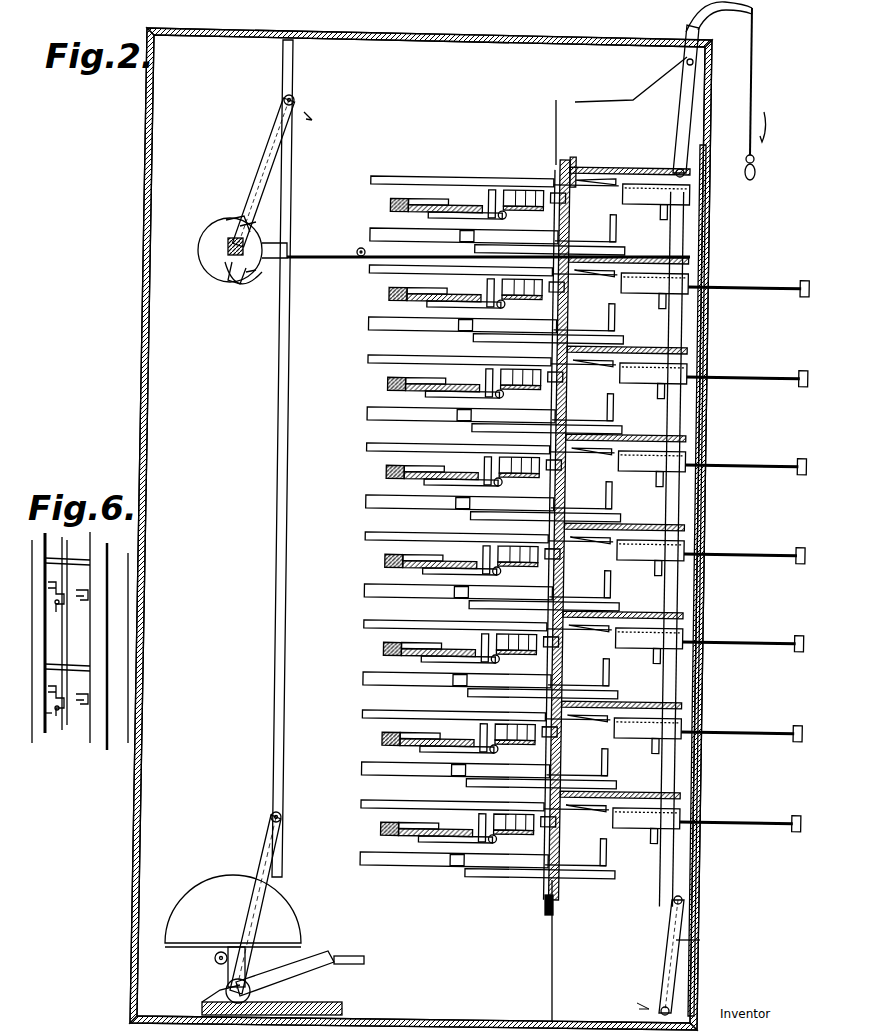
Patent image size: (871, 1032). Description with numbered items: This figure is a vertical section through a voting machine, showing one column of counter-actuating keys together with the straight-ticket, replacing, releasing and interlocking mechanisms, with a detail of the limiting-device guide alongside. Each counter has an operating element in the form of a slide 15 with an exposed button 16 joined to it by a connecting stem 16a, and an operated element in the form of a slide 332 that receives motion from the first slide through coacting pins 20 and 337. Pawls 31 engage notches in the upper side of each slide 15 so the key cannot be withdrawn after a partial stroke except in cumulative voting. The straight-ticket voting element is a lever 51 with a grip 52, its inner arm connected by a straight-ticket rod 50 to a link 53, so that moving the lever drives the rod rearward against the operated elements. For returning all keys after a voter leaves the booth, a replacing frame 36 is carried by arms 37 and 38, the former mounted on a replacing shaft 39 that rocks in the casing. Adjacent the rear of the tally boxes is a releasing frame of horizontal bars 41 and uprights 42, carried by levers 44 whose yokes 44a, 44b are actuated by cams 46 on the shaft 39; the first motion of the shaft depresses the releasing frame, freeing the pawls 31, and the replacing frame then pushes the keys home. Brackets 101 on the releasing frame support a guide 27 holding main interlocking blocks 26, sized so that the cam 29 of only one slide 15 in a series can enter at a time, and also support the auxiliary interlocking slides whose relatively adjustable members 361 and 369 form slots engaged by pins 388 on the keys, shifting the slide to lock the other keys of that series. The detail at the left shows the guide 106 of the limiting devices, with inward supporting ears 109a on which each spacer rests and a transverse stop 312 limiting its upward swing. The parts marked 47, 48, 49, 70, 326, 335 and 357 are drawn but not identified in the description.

In FIG. 2, the slide 15 is at (632, 182).
In FIG. 2, the button 16 is at (805, 276).
In FIG. 2, the connecting stem 16a is at (768, 283).
In FIG. 2, the pin 20 is at (662, 215).
In FIG. 2, the interlocking blocks 26 is at (500, 205).
In FIG. 2, the guide 27 is at (492, 190).
In FIG. 2, the cam 29 is at (550, 193).
In FIG. 2, the pawls 31 is at (569, 160).
In FIG. 2, the replacing frame 36 is at (278, 432).
In FIG. 2, the arms 37 is at (266, 143).
In FIG. 2, the arms 38 is at (262, 845).
In FIG. 2, the replacing shaft 39 is at (228, 268).
In FIG. 2, the horizontal bars 41 is at (545, 915).
In FIG. 2, the uprights 42 is at (556, 489).
In FIG. 2, the levers 44 is at (305, 252).
In FIG. 2, the yoke 44a is at (252, 226).
In FIG. 2, the yoke 44b is at (258, 270).
In FIG. 2, the cams 46 is at (220, 228).
In FIG. 2, the foot lever 47 is at (348, 966).
In FIG. 2, the pedestal 48 is at (262, 972).
In FIG. 2, the bell 49 is at (200, 893).
In FIG. 2, the straight-ticket rod 50 is at (672, 905).
In FIG. 2, the lever 51 is at (683, 76).
In FIG. 2, the grip 52 is at (756, 40).
In FIG. 2, the link 53 is at (690, 945).
In FIG. 2, the screw 70 is at (501, 218).
In FIG. 2, the brackets 101 is at (455, 236).
In FIG. 6, the guide 106 is at (108, 735).
In FIG. 6, the supporting ears 109a is at (48, 714).
In FIG. 6, the stop 312 is at (70, 570).
In FIG. 2, the spring bar 326 is at (600, 170).
In FIG. 2, the slide 332 is at (368, 270).
In FIG. 2, the plate 335 is at (470, 212).
In FIG. 2, the pin 337 is at (590, 912).
In FIG. 2, the bar 357 is at (548, 430).
In FIG. 2, the slide member 361 is at (402, 205).
In FIG. 2, the slide member 369 is at (390, 200).
In FIG. 2, the pins 388 is at (505, 198).